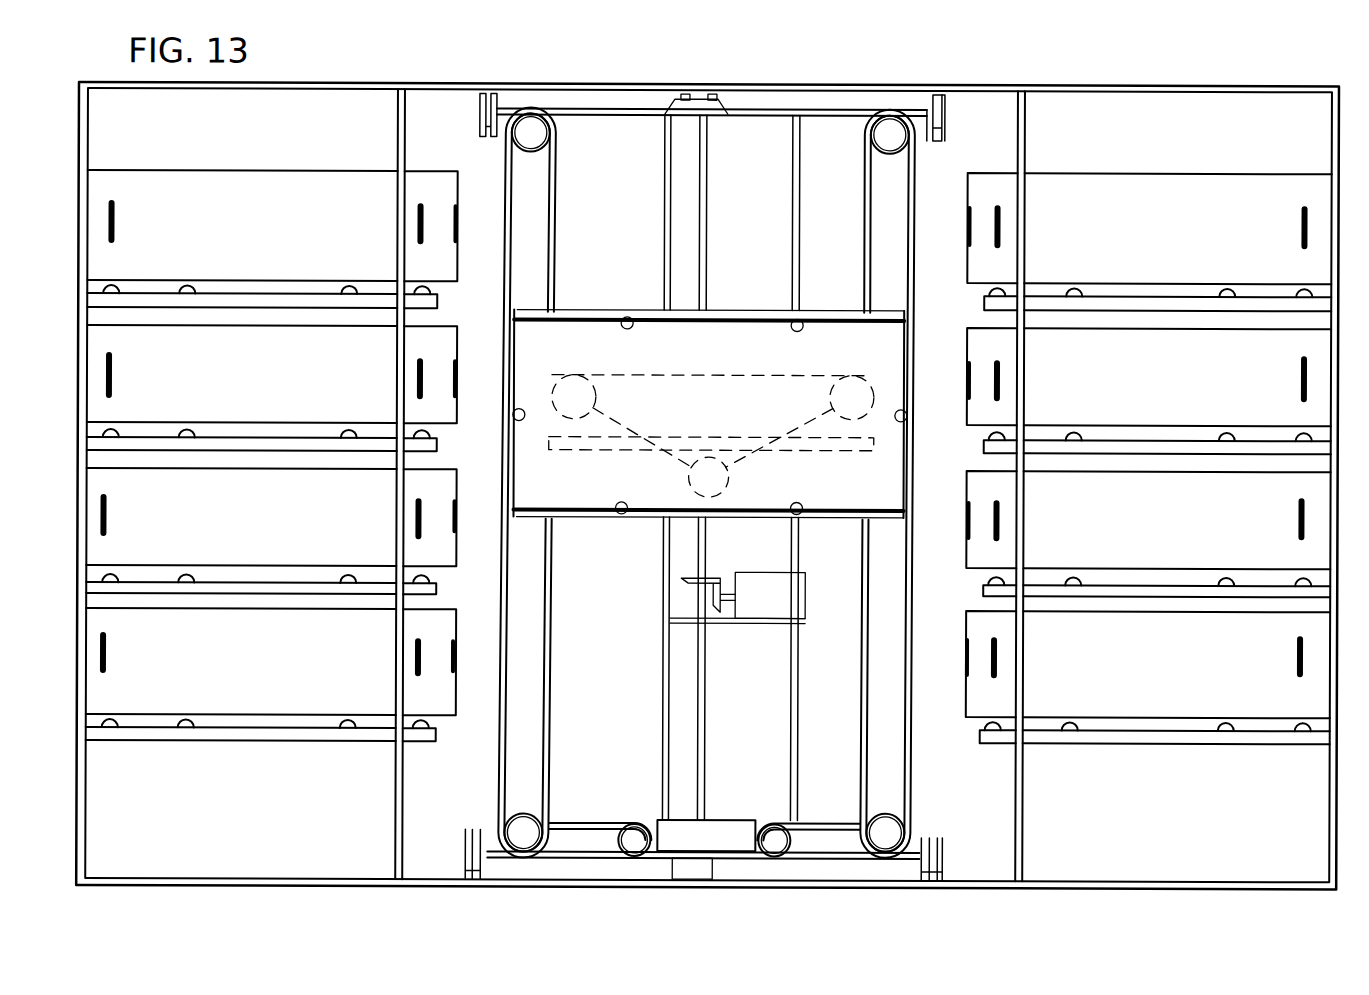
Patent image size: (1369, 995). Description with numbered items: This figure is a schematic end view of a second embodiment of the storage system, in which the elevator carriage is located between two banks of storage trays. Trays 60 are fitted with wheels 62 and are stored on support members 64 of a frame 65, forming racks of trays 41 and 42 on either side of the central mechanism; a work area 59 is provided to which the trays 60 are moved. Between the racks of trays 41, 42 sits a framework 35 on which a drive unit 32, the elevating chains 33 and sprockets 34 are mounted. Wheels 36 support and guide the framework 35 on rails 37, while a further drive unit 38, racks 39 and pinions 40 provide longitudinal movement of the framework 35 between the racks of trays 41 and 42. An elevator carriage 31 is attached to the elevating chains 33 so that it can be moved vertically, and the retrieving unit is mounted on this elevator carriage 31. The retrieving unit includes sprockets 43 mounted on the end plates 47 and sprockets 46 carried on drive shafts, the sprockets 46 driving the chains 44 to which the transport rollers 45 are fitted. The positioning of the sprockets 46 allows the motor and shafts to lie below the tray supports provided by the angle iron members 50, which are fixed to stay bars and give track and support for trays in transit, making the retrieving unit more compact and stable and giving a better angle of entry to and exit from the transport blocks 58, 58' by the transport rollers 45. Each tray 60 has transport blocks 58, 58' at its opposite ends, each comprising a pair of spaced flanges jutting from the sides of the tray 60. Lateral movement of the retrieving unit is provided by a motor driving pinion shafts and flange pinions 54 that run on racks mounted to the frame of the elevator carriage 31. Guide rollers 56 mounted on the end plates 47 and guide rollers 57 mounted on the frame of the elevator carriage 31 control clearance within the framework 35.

The elevator carriage 31 is at (709, 393).
The drive unit 32 is at (706, 849).
The elevating chains 33 is at (557, 220).
The sprockets 34 is at (893, 152).
The framework 35 is at (832, 114).
The wheels 36 is at (480, 131).
The rails 37 is at (480, 96).
The drive unit 38 is at (737, 597).
The racks 39 is at (682, 101).
The pinions 40 is at (727, 110).
The rack of trays 41 is at (272, 446).
The rack of trays 42 is at (1149, 455).
The sprockets 43 is at (713, 397).
The chains 44 is at (712, 376).
The transport rollers 45 is at (722, 499).
The sprockets 46 is at (709, 477).
The end plates 47 is at (723, 429).
The angle iron members 50 is at (866, 450).
The flange pinions 54 is at (618, 503).
The guide rollers 56 is at (623, 327).
The guide rollers 57 is at (522, 408).
The transport block 58 is at (433, 439).
The transport block 58' is at (131, 436).
The work area 59 is at (1205, 552).
The trays 60 is at (272, 442).
The wheels 62 is at (188, 287).
The support members 64 is at (233, 740).
The frame 65 is at (398, 822).